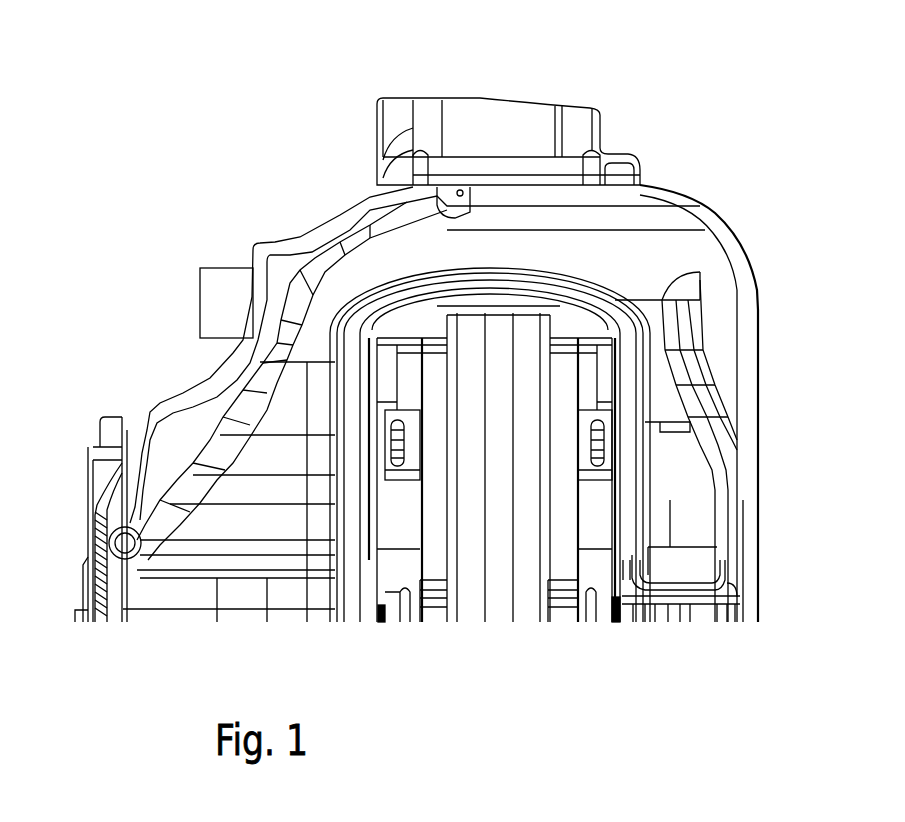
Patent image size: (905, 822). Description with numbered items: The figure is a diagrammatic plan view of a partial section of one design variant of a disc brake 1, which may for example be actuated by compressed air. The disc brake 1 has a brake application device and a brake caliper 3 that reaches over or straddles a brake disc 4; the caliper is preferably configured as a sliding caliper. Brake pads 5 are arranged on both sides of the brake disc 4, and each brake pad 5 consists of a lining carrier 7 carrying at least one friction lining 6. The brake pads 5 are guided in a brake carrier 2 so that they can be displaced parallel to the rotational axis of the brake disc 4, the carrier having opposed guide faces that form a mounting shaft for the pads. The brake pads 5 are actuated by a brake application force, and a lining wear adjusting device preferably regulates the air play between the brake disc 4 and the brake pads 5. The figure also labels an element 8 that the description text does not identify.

The disc brake 1 is at (246, 98).
The brake carrier 2 is at (476, 133).
The brake caliper 3 is at (683, 228).
The brake disc 4 is at (522, 507).
The brake pads 5 is at (432, 568).
The friction lining 6 is at (415, 377).
The lining carrier 7 is at (367, 355).
The flange 8 is at (620, 513).